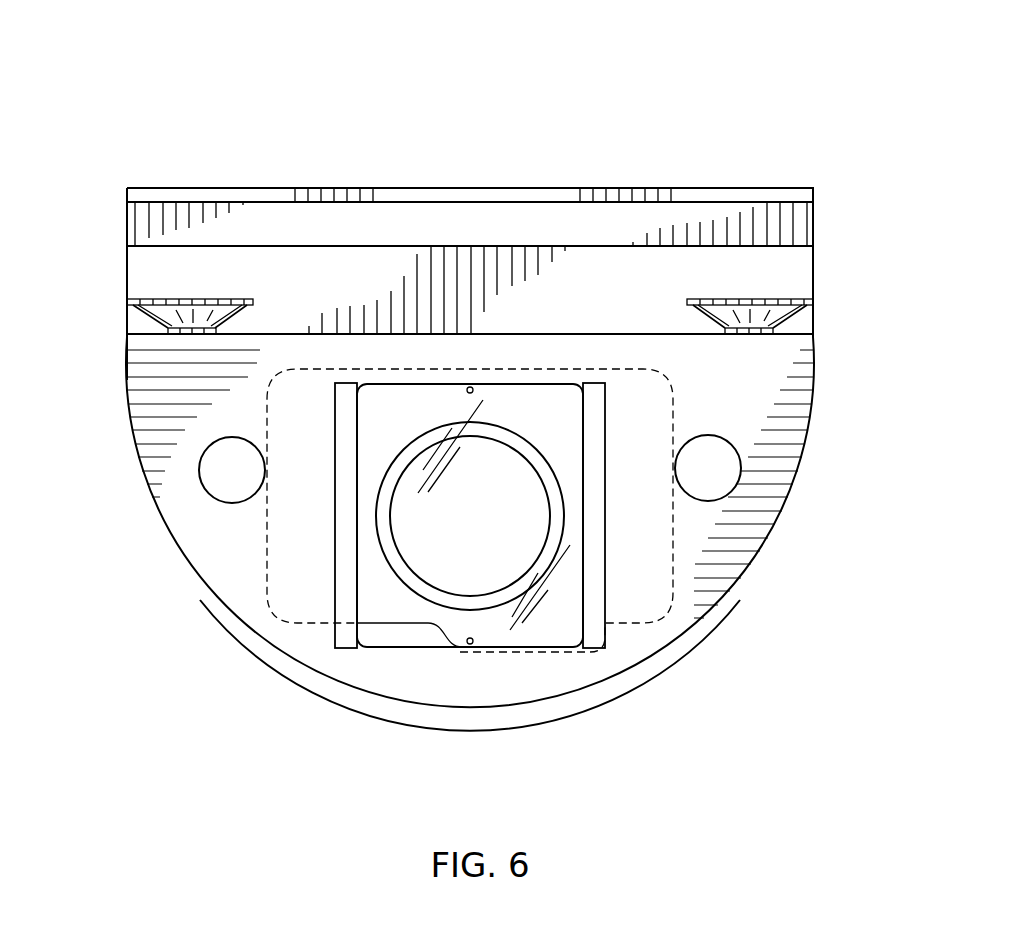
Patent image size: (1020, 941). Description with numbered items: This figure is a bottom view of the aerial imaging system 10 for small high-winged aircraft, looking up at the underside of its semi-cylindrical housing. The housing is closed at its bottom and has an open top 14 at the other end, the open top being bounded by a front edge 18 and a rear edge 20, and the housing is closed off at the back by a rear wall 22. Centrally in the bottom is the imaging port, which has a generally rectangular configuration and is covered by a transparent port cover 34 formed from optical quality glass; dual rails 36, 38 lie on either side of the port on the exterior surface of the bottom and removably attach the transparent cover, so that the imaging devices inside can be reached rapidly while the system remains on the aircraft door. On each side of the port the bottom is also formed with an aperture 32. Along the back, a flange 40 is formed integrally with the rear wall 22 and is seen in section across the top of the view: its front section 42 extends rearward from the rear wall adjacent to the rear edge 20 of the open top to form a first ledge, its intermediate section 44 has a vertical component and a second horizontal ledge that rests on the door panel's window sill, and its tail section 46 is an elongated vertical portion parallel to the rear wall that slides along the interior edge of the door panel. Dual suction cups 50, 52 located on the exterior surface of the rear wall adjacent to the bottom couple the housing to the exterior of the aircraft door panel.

The aerial imaging system 10 is at (537, 119).
The open top 14 is at (770, 363).
The front edge 18 is at (360, 695).
The rear edge 20 is at (127, 343).
The rear wall 22 is at (283, 335).
The aperture 32 is at (725, 456).
The transparent port cover 34 is at (407, 642).
The rail 36 is at (335, 650).
The rail 38 is at (603, 650).
The flange 40 is at (105, 198).
The front section 42 is at (813, 259).
The intermediate section 44 is at (800, 222).
The tail section 46 is at (201, 188).
The suction cup 50 is at (234, 302).
The suction cup 52 is at (797, 310).